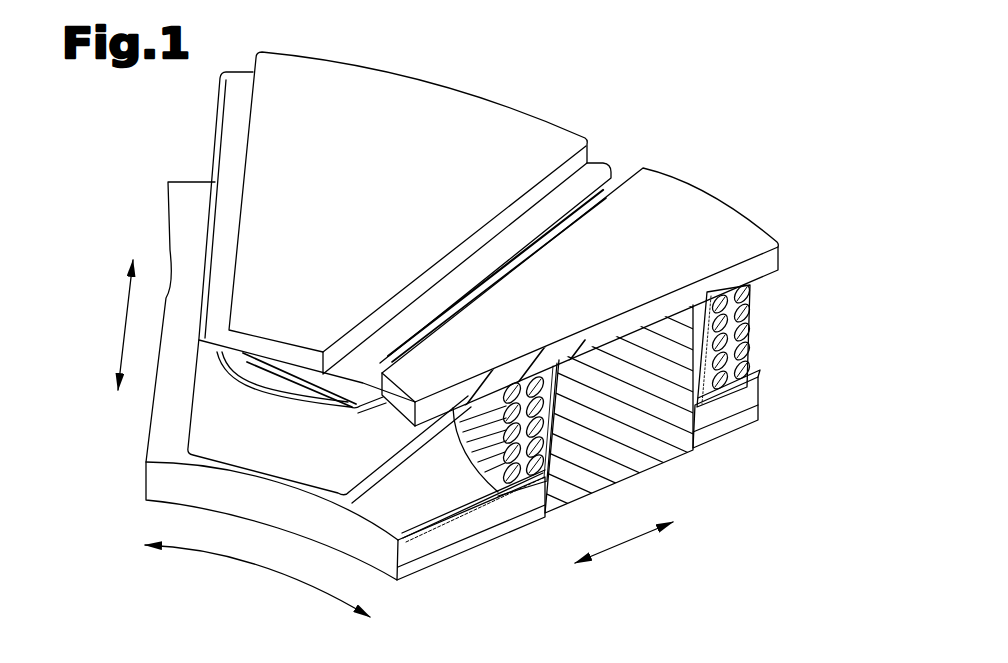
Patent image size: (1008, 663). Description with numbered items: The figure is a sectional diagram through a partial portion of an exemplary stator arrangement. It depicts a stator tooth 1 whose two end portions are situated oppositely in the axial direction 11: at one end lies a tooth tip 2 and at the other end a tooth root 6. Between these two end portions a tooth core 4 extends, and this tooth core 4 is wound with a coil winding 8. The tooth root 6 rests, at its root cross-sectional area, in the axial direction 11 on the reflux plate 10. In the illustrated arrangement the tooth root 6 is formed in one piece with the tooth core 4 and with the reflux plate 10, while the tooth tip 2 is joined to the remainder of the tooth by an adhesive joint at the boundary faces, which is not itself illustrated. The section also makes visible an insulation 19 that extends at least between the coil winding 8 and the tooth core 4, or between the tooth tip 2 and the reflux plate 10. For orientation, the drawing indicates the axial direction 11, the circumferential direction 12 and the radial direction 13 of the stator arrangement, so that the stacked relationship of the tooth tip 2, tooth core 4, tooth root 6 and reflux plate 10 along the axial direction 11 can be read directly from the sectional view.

The stator tooth 1 is at (616, 73).
The tooth tip 2 is at (465, 390).
The tooth core 4 is at (663, 380).
The tooth root 6 is at (658, 456).
The coil winding 8 is at (747, 338).
The reflux plate 10 is at (453, 542).
The axial direction 11 is at (127, 313).
The circumferential direction 12 is at (245, 560).
The radial direction 13 is at (632, 545).
The insulation 19 is at (770, 268).